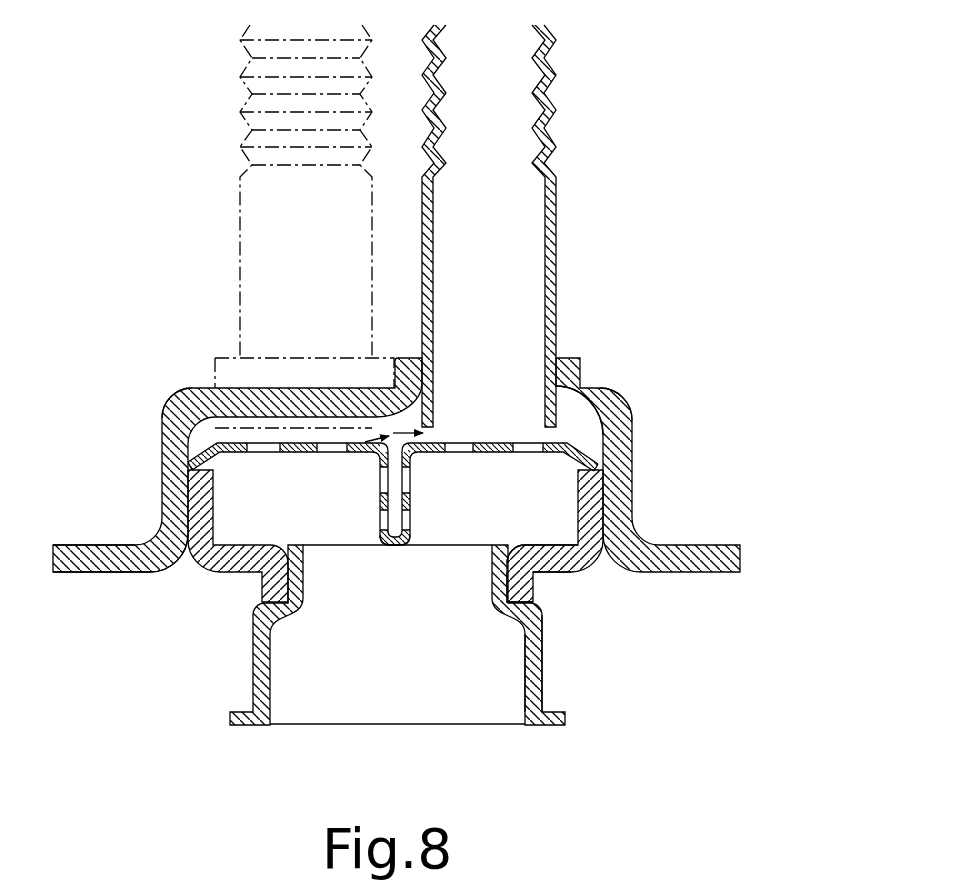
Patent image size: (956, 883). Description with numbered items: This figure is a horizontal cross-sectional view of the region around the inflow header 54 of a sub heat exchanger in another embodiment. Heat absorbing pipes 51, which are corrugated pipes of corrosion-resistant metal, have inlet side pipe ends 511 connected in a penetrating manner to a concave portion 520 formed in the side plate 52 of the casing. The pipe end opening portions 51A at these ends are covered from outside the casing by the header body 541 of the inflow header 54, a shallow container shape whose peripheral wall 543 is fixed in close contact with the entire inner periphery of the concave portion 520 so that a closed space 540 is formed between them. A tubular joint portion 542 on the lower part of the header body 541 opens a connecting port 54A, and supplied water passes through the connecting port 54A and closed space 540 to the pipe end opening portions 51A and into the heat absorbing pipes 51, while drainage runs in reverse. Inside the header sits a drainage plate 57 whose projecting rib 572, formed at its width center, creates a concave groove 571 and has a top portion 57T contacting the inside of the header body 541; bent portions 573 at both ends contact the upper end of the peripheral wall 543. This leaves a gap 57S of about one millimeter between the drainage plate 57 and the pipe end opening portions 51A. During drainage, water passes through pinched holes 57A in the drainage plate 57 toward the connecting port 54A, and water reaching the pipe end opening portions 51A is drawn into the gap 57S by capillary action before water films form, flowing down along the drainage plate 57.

The heat absorbing pipe 51 is at (243, 82).
The inlet side pipe end 511 is at (190, 397).
The pipe end opening portion 51A is at (579, 470).
The side plate 52 is at (85, 573).
The concave portion 520 is at (187, 545).
The inflow header 54 is at (233, 660).
The connecting port 54A is at (450, 565).
The closed space 540 is at (588, 428).
The header body 541 is at (548, 572).
The joint portion 542 is at (543, 680).
The peripheral wall 543 is at (213, 503).
The drainage plate 57 is at (282, 462).
The pinched hole 57A is at (458, 443).
The gap 57S is at (380, 430).
The top portion 57T is at (407, 546).
The concave groove 571 is at (352, 446).
The projecting rib 572 is at (380, 503).
The bent portion 573 is at (168, 438).